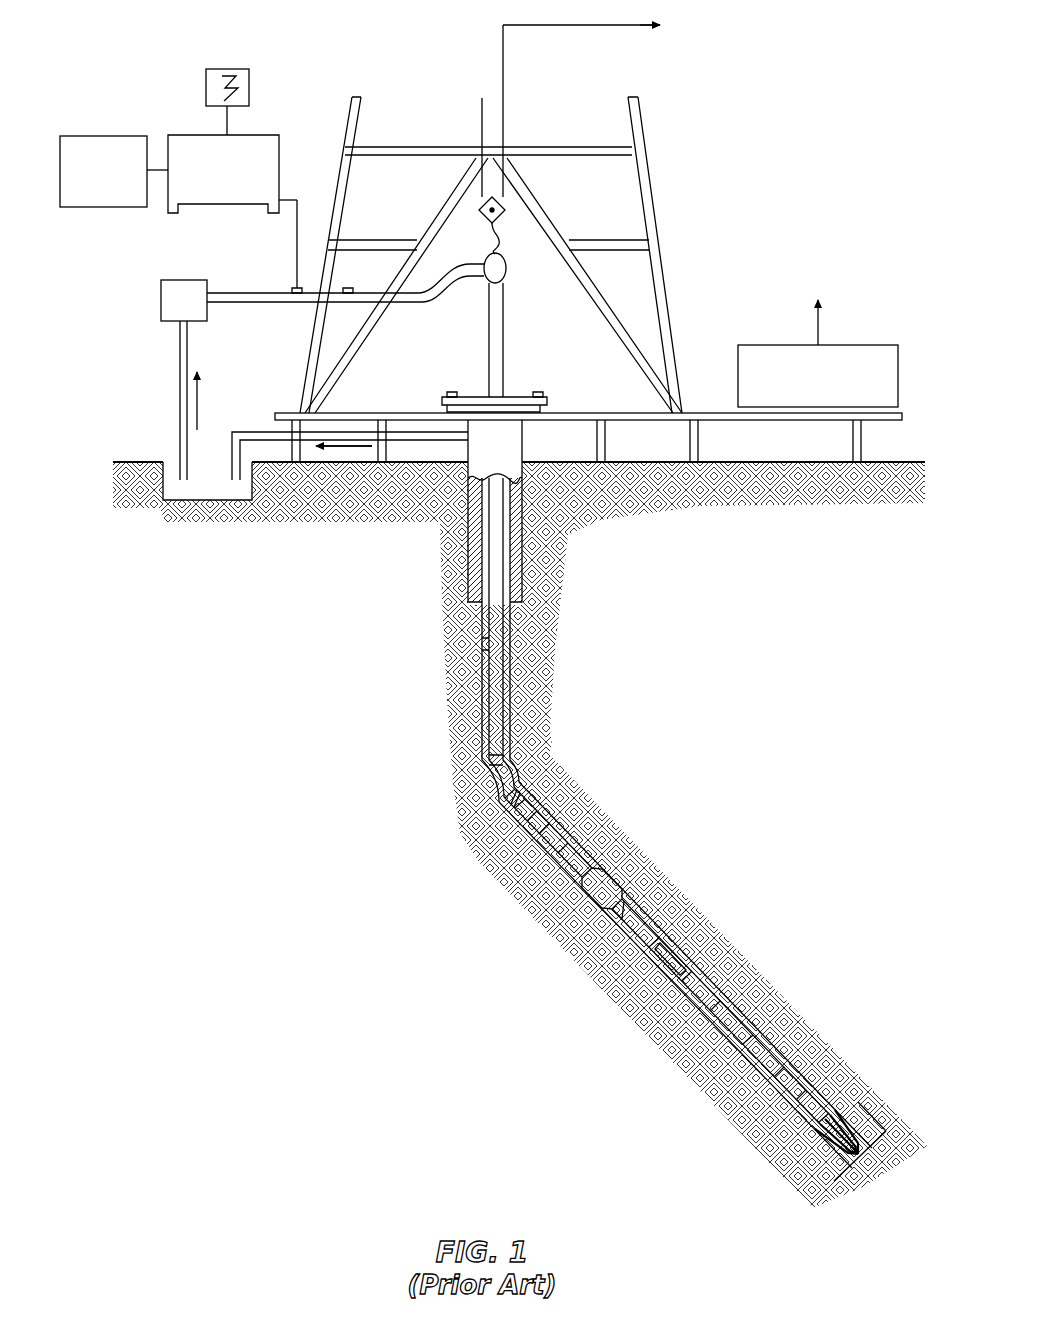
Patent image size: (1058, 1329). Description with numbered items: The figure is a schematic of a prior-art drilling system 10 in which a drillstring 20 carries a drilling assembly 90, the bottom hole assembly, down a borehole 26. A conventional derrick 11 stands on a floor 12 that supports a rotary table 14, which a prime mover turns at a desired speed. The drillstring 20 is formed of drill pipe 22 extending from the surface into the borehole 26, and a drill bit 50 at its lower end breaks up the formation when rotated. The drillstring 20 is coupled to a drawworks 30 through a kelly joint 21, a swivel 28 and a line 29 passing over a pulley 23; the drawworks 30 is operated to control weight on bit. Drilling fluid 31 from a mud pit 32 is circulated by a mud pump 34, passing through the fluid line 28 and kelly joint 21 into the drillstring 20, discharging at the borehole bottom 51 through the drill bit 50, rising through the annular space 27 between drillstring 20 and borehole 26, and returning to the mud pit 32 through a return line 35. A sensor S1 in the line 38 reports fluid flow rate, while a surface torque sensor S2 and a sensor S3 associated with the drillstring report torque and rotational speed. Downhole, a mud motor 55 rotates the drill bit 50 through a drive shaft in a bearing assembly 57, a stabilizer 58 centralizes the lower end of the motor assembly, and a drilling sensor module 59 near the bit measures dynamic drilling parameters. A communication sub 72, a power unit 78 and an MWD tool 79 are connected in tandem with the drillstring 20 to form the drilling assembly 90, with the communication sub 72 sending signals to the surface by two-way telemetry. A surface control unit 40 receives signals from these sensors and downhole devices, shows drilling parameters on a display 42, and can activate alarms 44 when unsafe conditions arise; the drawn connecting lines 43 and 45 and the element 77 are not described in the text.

The drilling system 10 is at (420, 38).
The derrick 11 is at (663, 256).
The floor 12 is at (683, 413).
The rotary table 14 is at (507, 395).
The drillstring 20 is at (507, 698).
The kelly joint 21 is at (503, 318).
The drill pipe 22 is at (480, 676).
The pulley 23 is at (497, 210).
The borehole 26 is at (517, 786).
The annular space 27 is at (535, 822).
The swivel 28 is at (485, 285).
The line 29 is at (505, 117).
The drawworks 30 is at (862, 345).
The drilling fluid 31 is at (170, 470).
The mud pit 32 is at (195, 500).
The mud pump 34 is at (175, 280).
The return line 35 is at (432, 445).
The line 38 is at (286, 302).
The surface control unit 40 is at (205, 135).
The display/monitor 42 is at (222, 69).
The sensor signal line 43 is at (290, 290).
The alarms 44 is at (106, 207).
The control signal line 45 is at (285, 200).
The drill bit 50 is at (848, 1123).
The borehole bottom 51 is at (845, 1185).
The downhole motor 55 is at (688, 957).
The bearing assembly 57 is at (802, 1076).
The stabilizer 58 is at (819, 1093).
The drilling sensor module 59 is at (818, 1124).
The communication sub 72 is at (487, 795).
The stabilizer 77 is at (590, 900).
The power unit 78 is at (518, 814).
The MWD tool 79 is at (542, 839).
The drilling assembly 90 is at (732, 875).
The sensor S1 is at (349, 288).
The surface torque sensor S2 is at (539, 392).
The sensor S3 is at (451, 392).